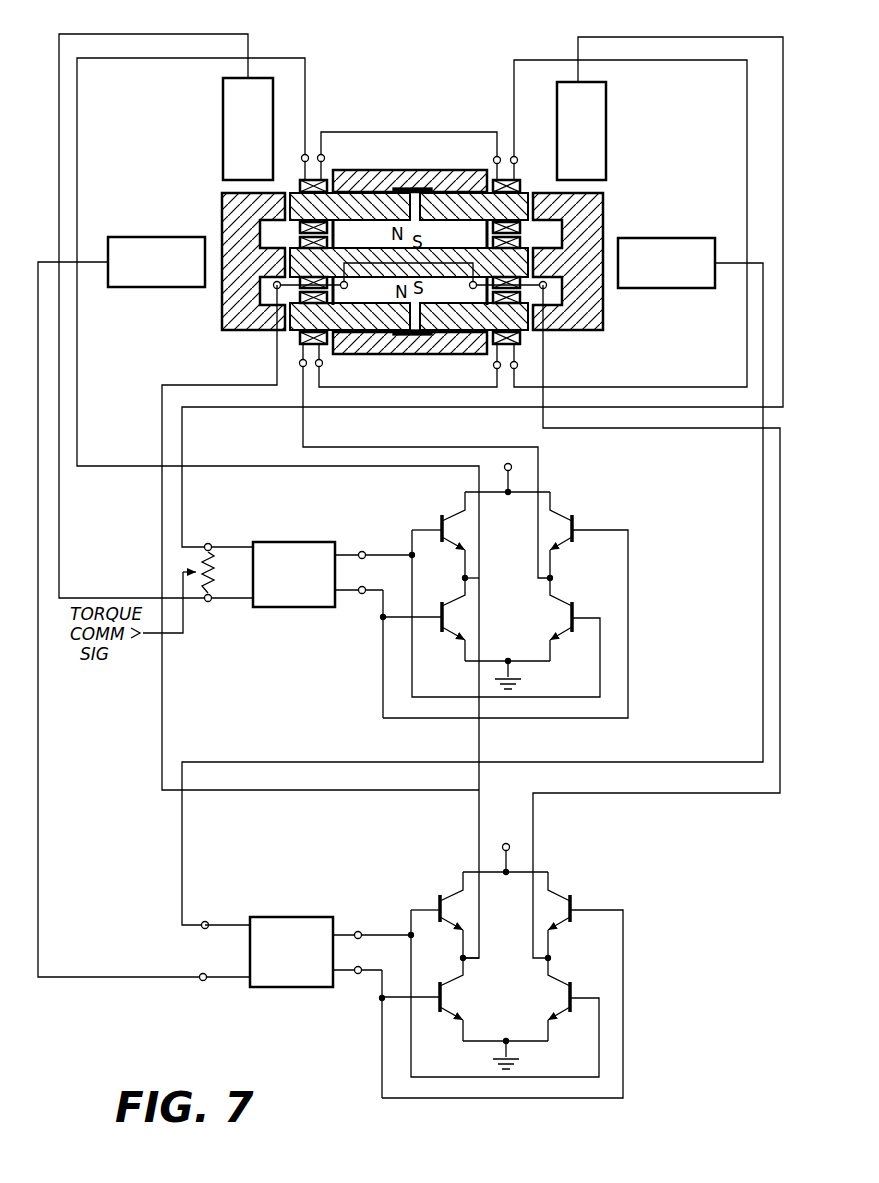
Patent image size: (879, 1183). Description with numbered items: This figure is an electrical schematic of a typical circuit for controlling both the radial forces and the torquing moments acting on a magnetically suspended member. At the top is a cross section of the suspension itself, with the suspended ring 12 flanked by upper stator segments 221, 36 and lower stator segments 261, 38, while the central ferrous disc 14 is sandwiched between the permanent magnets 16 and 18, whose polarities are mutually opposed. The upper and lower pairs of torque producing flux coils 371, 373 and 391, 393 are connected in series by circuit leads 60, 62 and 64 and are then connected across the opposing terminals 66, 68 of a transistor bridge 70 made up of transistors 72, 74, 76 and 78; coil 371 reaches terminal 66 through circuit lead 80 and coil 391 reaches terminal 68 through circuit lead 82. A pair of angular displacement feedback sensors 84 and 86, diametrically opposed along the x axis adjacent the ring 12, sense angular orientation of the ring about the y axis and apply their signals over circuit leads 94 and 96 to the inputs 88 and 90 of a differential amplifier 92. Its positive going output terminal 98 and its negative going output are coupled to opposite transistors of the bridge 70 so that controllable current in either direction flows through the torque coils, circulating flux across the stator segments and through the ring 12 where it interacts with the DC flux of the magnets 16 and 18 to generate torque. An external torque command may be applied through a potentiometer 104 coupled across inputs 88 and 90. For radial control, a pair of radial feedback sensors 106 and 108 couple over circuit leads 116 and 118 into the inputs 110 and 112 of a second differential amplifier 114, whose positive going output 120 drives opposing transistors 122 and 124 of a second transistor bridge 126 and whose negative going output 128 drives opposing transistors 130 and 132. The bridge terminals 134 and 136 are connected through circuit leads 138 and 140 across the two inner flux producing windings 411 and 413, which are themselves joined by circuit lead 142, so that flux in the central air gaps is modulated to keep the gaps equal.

The suspended ring 12 is at (604, 230).
The magnetically permeable ferrous disc 14 is at (388, 277).
The permanent magnet 16 is at (437, 200).
The permanent magnet 18 is at (445, 300).
The upper stator segment 221 is at (377, 200).
The lower stator segment 261 is at (374, 326).
The upper stator segment 36 is at (362, 170).
The lower stator segment 38 is at (448, 355).
The torque producing flux coil 371 is at (327, 180).
The torque producing flux coil 373 is at (517, 180).
The torque producing flux coil 391 is at (298, 338).
The torque producing flux coil 393 is at (522, 338).
The inner flux producing winding 411 is at (300, 240).
The inner flux producing winding 413 is at (522, 291).
The circuit lead 60 is at (430, 132).
The circuit lead 62 is at (657, 60).
The circuit lead 64 is at (480, 387).
The bridge terminal 66 is at (462, 578).
The bridge terminal 68 is at (553, 578).
The transistor bridge 70 is at (522, 584).
The transistor 72 is at (442, 518).
The transistor 74 is at (441, 631).
The transistor 76 is at (572, 521).
The transistor 78 is at (573, 627).
The circuit lead 80 is at (137, 466).
The circuit lead 82 is at (405, 447).
The angular displacement feedback sensor 84 is at (223, 143).
The angular displacement feedback sensor 86 is at (606, 141).
The differential amplifier input 88 is at (217, 526).
The differential amplifier input 90 is at (208, 603).
The differential amplifier 92 is at (295, 542).
The circuit lead 94 is at (173, 34).
The circuit lead 96 is at (672, 37).
The output terminal 98 is at (366, 551).
The potentiometer 104 is at (212, 570).
The radial feedback sensor 106 is at (147, 237).
The radial feedback sensor 108 is at (685, 238).
The differential amplifier input 110 is at (362, 598).
The differential amplifier input 112 is at (206, 984).
The second differential amplifier 114 is at (272, 917).
The circuit lead 116 is at (318, 762).
The circuit lead 118 is at (90, 978).
The positive going output 120 is at (362, 931).
The transistor 122 is at (440, 897).
The transistor 124 is at (571, 1007).
The second transistor bridge 126 is at (502, 964).
The negative going output 128 is at (358, 977).
The transistor 130 is at (572, 904).
The transistor 132 is at (440, 1009).
The bridge terminal 134 is at (461, 958).
The bridge terminal 136 is at (551, 958).
The circuit lead 138 is at (163, 688).
The circuit lead 140 is at (687, 793).
The circuit lead 142 is at (372, 259).